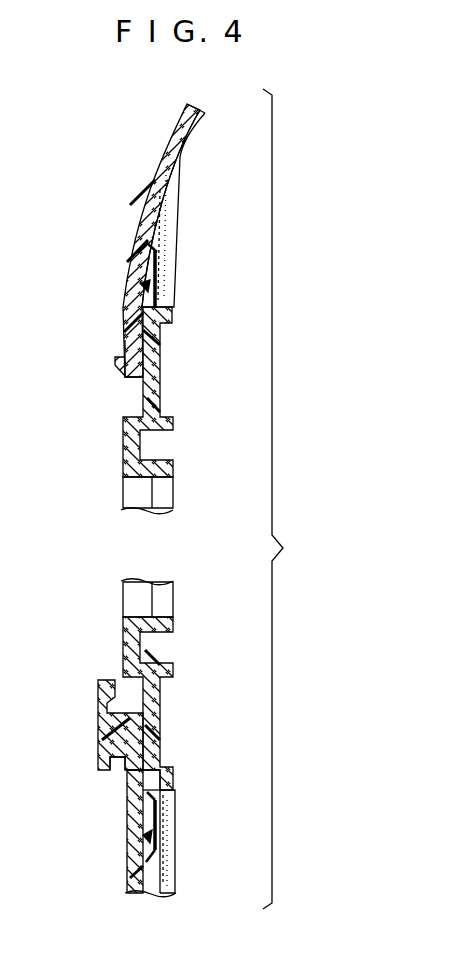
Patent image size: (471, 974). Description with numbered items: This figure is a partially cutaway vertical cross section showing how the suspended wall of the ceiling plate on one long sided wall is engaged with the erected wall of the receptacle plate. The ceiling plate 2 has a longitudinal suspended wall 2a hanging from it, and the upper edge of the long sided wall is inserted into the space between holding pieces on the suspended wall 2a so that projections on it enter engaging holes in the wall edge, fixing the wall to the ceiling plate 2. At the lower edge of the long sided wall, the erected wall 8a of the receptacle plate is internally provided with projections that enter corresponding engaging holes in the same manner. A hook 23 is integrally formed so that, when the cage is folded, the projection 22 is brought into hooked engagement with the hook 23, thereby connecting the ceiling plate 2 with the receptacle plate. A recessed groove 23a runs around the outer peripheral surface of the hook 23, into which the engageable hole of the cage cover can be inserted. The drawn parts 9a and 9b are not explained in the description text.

The blade 2 is at (147, 188).
The blade base portion 2a is at (130, 345).
The engaging hook 8a is at (137, 807).
The engaging projection 9a is at (155, 338).
The engaging projection 9b is at (125, 790).
The hook 22 is at (123, 360).
The clamp block 23 is at (107, 737).
The clamp block notch 23a is at (120, 768).